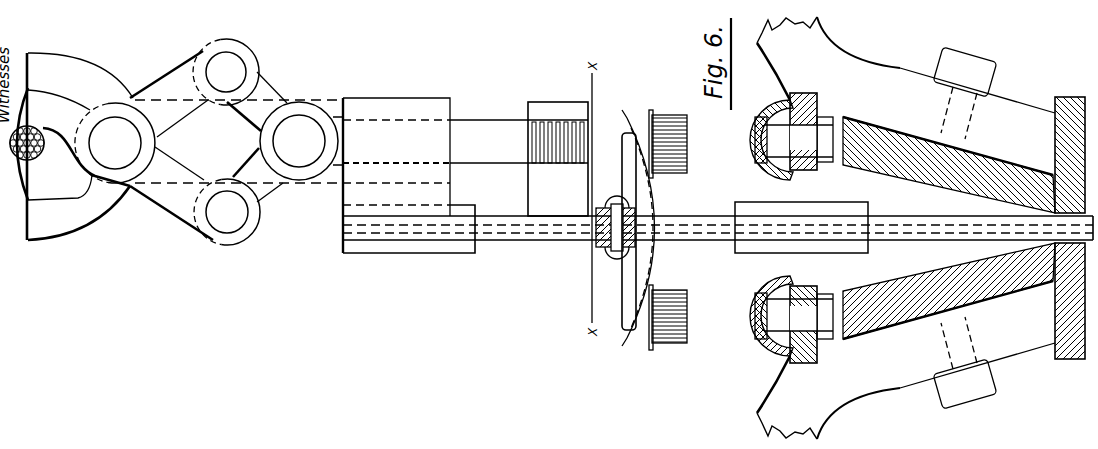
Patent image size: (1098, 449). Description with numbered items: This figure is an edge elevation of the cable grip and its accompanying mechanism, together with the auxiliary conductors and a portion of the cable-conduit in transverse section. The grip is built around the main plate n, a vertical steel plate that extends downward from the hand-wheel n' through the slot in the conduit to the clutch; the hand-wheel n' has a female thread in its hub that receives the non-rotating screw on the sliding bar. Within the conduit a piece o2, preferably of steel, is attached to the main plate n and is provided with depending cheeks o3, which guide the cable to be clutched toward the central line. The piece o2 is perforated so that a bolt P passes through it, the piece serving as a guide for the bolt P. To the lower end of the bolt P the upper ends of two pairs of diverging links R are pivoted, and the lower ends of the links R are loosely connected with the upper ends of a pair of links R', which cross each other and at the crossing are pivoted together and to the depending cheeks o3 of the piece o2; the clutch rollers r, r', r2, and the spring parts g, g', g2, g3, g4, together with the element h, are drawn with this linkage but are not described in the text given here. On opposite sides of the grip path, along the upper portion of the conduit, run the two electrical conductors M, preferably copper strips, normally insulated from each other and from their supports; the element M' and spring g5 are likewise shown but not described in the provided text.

The depending cheeks o3 is at (65, 227).
The piece o2 is at (410, 250).
The roller r2 is at (115, 143).
The roller r is at (265, 109).
The roller r' is at (227, 228).
The diverging links R is at (239, 152).
The links R' is at (195, 148).
The bolt P is at (435, 175).
The main plate n is at (718, 239).
The hand-wheel n' is at (799, 242).
The guide block g4 is at (558, 159).
The hub h is at (622, 176).
The spring bar g is at (617, 231).
The bow spring g' is at (646, 228).
The spring leaf g2 is at (650, 196).
The coil spring g3 is at (665, 112).
The coil spring g5 is at (668, 345).
The electrical conductors M is at (911, 115).
The bearing standard M' is at (911, 341).